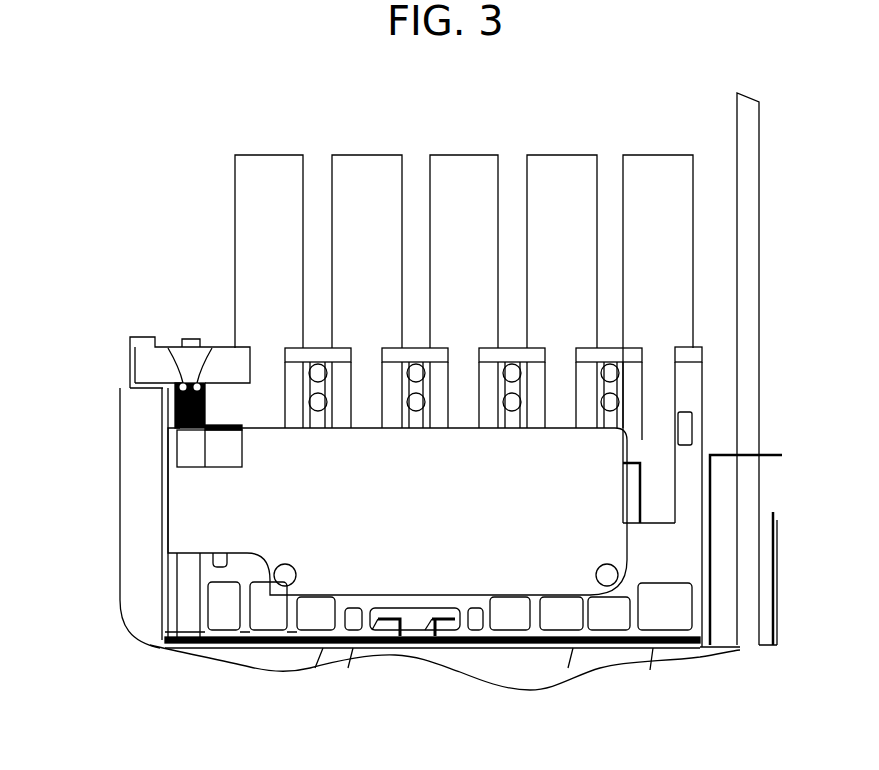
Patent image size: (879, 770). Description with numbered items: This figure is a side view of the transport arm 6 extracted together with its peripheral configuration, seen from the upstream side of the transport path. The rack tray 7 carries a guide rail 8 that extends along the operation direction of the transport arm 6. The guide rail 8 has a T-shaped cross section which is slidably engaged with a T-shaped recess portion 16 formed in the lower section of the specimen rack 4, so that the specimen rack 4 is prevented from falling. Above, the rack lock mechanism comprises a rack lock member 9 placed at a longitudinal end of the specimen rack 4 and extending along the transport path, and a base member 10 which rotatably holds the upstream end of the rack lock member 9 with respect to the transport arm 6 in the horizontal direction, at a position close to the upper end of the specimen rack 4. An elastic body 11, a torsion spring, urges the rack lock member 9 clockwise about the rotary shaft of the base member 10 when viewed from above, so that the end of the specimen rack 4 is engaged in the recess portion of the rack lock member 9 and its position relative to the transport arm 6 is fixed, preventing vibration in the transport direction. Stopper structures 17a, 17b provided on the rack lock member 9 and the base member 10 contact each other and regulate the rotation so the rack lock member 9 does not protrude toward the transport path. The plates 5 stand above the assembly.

The specimen rack 4 is at (690, 382).
The plate 5 is at (661, 175).
The transport arm 6 is at (178, 533).
The rack tray 7 is at (532, 650).
The guide rail 8 is at (437, 627).
The rack lock member 9 is at (137, 365).
The base member 10 is at (183, 448).
The elastic body 11 is at (172, 412).
The T-shaped recess portion 16 is at (375, 626).
The stopper structure 17a is at (182, 380).
The stopper structure 17b is at (192, 380).